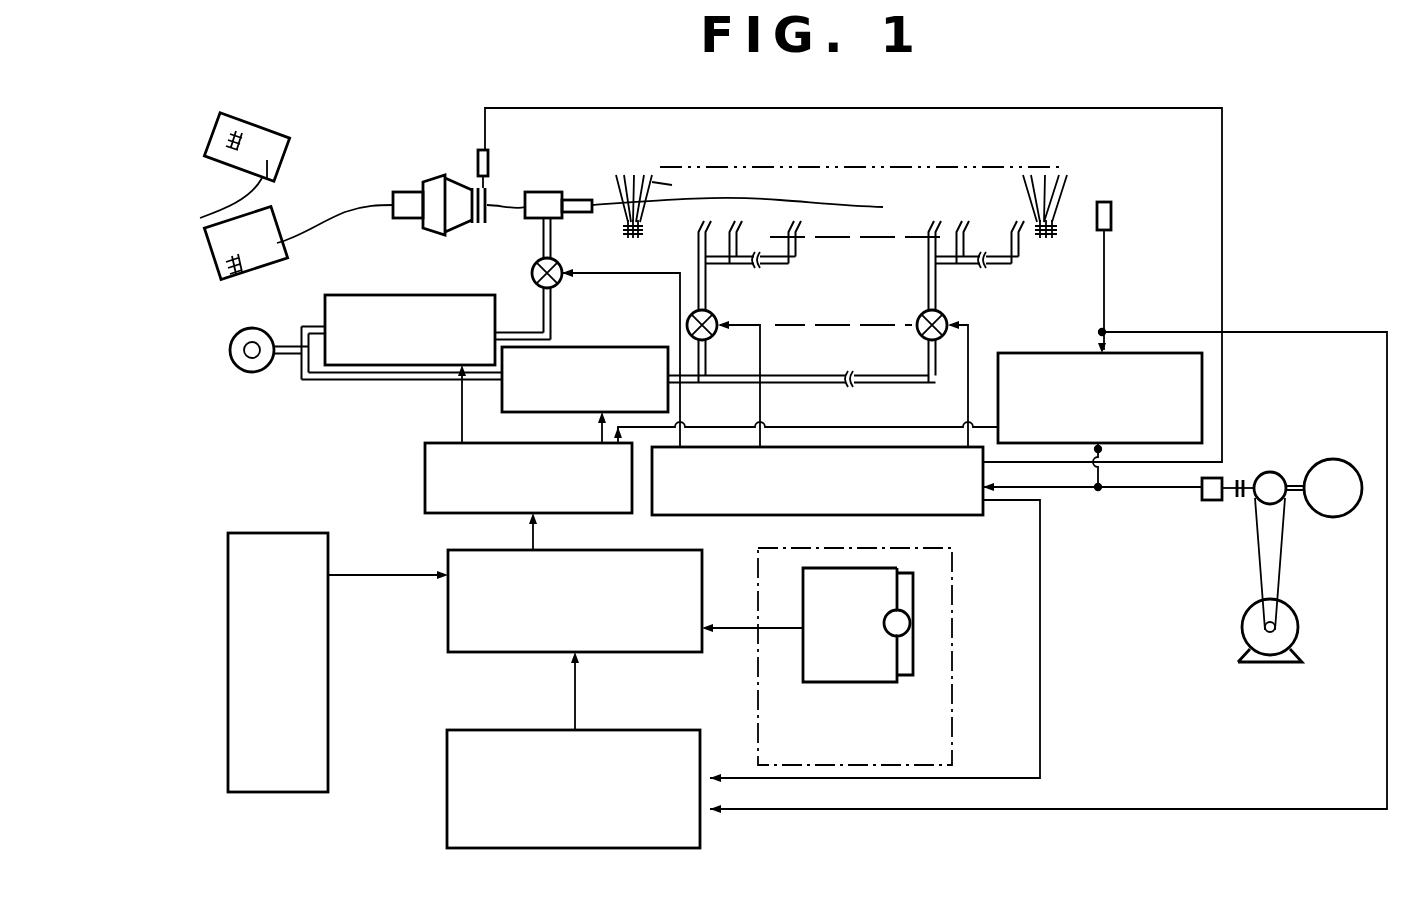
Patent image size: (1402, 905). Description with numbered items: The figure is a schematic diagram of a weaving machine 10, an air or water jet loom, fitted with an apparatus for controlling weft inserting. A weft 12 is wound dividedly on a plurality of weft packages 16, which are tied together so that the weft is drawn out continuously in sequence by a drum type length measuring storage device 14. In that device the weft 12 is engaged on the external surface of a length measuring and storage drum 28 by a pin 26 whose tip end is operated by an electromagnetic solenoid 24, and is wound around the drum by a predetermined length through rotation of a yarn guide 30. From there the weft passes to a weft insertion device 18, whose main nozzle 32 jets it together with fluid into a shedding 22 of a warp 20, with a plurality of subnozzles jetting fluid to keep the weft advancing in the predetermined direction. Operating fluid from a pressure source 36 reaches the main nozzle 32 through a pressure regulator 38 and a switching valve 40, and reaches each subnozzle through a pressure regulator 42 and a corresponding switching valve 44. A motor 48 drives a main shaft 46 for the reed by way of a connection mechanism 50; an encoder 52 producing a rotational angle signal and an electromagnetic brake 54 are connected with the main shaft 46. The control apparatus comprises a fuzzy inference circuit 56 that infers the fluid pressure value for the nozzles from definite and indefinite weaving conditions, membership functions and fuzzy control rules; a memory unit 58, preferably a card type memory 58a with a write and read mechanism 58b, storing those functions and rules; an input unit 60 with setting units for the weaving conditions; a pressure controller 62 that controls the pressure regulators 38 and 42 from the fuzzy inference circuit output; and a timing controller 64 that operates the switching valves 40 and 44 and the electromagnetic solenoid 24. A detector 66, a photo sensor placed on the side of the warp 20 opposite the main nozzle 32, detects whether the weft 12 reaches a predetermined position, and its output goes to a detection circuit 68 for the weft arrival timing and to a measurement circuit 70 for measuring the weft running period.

The weaving machine 10 is at (1266, 155).
The weft 12 is at (876, 208).
The length measuring storage device 14 is at (420, 182).
The weft packages 16 is at (278, 133).
The weft insertion device 18 is at (538, 188).
The warp 20 is at (680, 185).
The shedding 22 is at (634, 172).
The electromagnetic solenoid 24 is at (478, 152).
The pin 26 is at (477, 190).
The length measuring and storage drum 28 is at (458, 215).
The yarn guide 30 is at (426, 230).
The main nozzle 32 is at (576, 199).
The pressure source 36 is at (260, 330).
The pressure regulator 38 is at (354, 294).
The switching valve 40 is at (534, 262).
The pressure regulator 42 is at (614, 346).
The switching valves 44 is at (714, 316).
The main shaft 46 is at (1270, 472).
The motor 48 is at (1296, 640).
The connection mechanism 50 is at (1285, 558).
The encoder 52 is at (1210, 502).
The electromagnetic brake 54 is at (1336, 459).
The fuzzy inference circuit 56 is at (705, 566).
The memory unit 58 is at (952, 560).
The memory 58a is at (913, 617).
The write and read mechanism 58b is at (897, 658).
The input unit 60 is at (270, 532).
The pressure controller 62 is at (424, 478).
The timing controller 64 is at (972, 516).
The detector 66 is at (1112, 216).
The detection circuit 68 is at (1032, 352).
The measurement circuit 70 is at (446, 802).